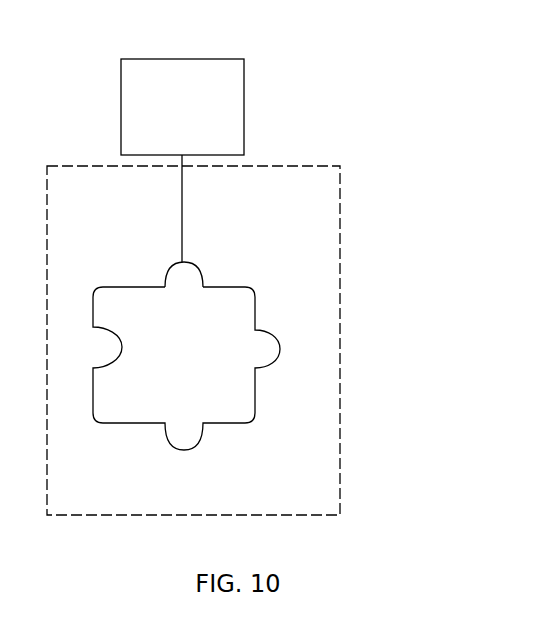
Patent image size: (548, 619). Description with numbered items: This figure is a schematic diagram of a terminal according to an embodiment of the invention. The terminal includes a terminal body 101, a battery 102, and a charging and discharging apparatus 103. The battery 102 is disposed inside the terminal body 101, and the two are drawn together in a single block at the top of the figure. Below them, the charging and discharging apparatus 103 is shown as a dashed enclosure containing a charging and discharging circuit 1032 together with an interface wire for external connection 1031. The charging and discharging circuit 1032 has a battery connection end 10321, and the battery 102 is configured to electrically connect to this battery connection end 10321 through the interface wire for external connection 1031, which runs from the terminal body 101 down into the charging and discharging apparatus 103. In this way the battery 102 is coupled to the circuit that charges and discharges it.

The terminal body 101 is at (235, 82).
The battery 102 is at (208, 129).
The charging and discharging apparatus 103 is at (340, 205).
The interface wire for external connection 1031 is at (180, 208).
The charging and discharging circuit 1032 is at (255, 300).
The battery connection end 10321 is at (192, 262).